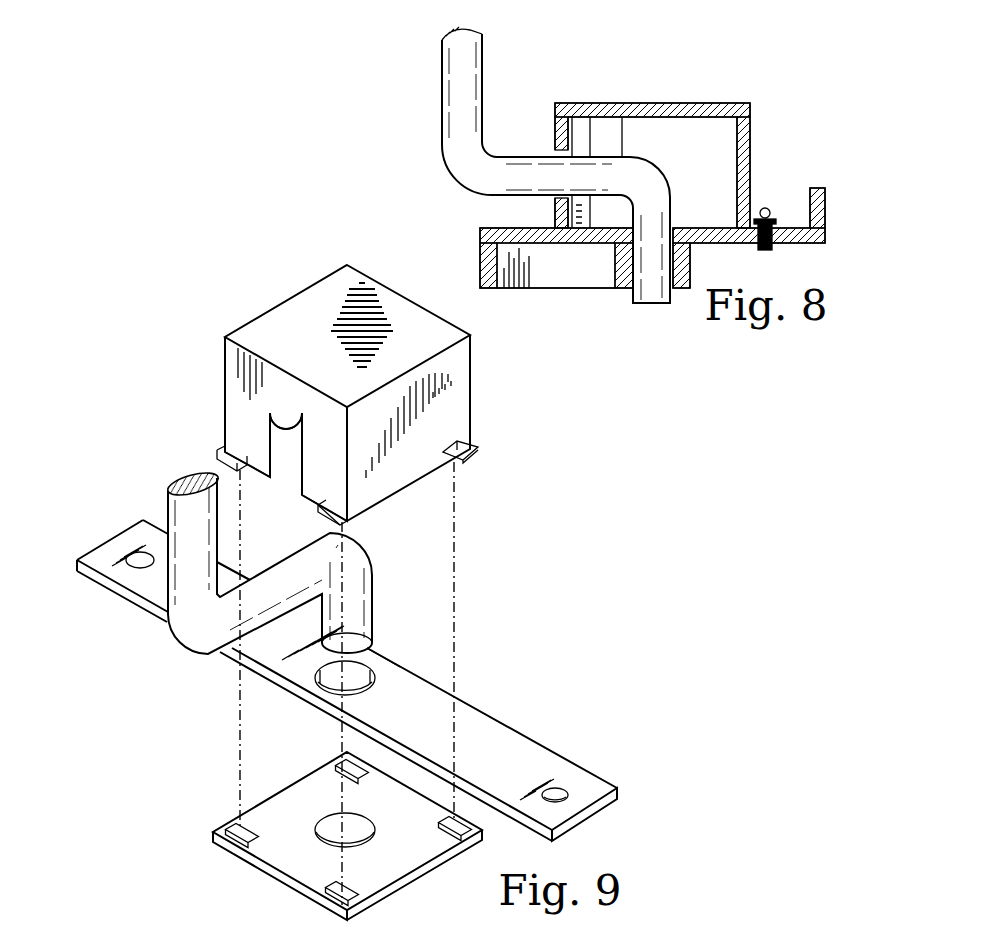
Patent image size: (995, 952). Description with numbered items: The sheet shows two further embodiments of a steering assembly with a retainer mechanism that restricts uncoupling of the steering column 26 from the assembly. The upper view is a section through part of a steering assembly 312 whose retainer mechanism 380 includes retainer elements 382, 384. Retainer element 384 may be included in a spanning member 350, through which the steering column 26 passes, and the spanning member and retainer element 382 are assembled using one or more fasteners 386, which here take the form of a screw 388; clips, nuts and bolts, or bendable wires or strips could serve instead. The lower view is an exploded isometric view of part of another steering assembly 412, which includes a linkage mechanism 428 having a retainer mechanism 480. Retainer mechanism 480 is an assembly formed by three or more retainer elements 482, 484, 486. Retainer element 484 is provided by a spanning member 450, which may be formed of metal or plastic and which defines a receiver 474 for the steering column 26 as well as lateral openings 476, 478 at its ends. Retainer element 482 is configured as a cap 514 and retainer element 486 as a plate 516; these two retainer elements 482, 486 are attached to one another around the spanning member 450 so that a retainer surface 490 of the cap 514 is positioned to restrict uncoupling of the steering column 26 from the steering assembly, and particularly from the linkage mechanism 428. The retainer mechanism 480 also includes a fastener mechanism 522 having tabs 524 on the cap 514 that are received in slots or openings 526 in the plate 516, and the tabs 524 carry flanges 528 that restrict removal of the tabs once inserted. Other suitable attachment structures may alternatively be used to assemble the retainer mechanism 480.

In FIG. 8, the steering column 26 is at (440, 80).
In FIG. 9, the steering column 26 is at (165, 506).
In FIG. 8, the steering assembly 312 is at (405, 127).
In FIG. 8, the spanning member 350 is at (470, 254).
In FIG. 8, the retainer mechanism 380 is at (768, 126).
In FIG. 8, the retainer element 382 is at (585, 97).
In FIG. 8, the retainer element 384 is at (538, 220).
In FIG. 8, the fastener 386 is at (767, 207).
In FIG. 8, the screw 388 is at (773, 249).
In FIG. 9, the steering assembly 412 is at (108, 430).
In FIG. 9, the linkage mechanism 428 is at (110, 512).
In FIG. 9, the spanning member 450 is at (468, 696).
In FIG. 9, the receiver 474 is at (360, 688).
In FIG. 9, the lateral opening 476 is at (140, 562).
In FIG. 9, the lateral opening 478 is at (565, 795).
In FIG. 9, the retainer mechanism 480 is at (475, 509).
In FIG. 9, the retainer element 482 is at (476, 393).
In FIG. 9, the retainer element 484 is at (373, 655).
In FIG. 9, the retainer element 486 is at (268, 886).
In FIG. 9, the retainer surface 490 is at (291, 414).
In FIG. 9, the cap 514 is at (260, 338).
In FIG. 9, the plate 516 is at (296, 783).
In FIG. 9, the fastener mechanism 522 is at (367, 522).
In FIG. 9, the tab 524 is at (253, 458).
In FIG. 9, the slot 526 is at (243, 832).
In FIG. 9, the flange 528 is at (233, 456).